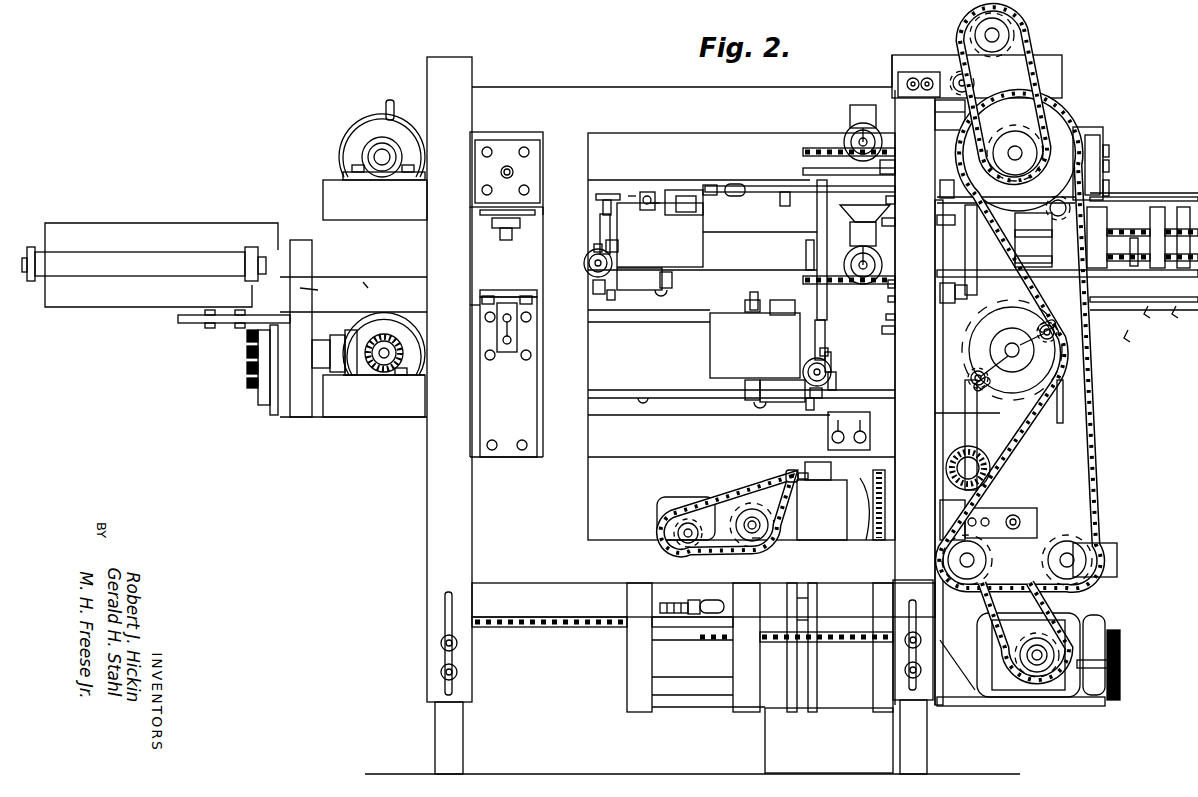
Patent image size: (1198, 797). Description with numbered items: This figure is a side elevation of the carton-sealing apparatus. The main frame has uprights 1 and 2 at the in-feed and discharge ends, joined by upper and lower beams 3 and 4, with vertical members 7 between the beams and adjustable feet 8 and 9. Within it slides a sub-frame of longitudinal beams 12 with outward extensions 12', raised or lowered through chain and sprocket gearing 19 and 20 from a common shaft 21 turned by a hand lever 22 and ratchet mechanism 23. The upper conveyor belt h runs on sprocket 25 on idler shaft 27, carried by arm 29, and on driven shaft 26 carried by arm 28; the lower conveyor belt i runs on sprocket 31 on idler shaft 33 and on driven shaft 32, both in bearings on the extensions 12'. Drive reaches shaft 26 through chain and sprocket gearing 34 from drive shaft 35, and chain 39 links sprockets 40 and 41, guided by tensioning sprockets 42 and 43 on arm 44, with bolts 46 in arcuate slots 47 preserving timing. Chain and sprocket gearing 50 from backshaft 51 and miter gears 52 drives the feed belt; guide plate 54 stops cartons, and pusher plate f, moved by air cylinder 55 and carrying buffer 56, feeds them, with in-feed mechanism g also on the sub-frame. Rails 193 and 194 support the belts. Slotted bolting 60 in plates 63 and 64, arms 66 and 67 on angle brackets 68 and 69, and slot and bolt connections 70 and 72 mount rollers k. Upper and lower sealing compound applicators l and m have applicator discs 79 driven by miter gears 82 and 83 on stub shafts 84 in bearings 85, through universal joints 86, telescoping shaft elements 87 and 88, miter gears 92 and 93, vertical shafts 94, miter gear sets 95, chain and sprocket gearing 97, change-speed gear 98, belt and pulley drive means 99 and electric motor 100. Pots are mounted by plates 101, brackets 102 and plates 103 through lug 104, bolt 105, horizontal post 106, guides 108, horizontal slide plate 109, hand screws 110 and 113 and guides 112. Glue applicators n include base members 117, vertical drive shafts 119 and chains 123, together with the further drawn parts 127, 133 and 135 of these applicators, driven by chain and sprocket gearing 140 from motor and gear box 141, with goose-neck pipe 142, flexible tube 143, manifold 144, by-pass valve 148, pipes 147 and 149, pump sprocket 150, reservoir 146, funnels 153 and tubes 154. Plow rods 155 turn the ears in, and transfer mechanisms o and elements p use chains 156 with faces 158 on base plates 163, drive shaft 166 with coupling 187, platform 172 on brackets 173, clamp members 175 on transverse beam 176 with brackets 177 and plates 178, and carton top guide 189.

The upright 1 is at (426, 498).
The upright 2 is at (930, 430).
The upper beam 3 is at (650, 93).
The lower beam 4 is at (606, 585).
The vertical member 7 is at (618, 503).
The adjustable foot 8 is at (436, 731).
The adjustable foot 9 is at (922, 735).
The longitudinal beam 12 is at (627, 469).
The outward extension 12' is at (675, 430).
The chain and sprocket gearing 19 is at (530, 628).
The chain and sprocket gearing 20 is at (824, 646).
The common shaft 21 is at (692, 598).
The hand lever 22 is at (715, 598).
The ratchet mechanism 23 is at (676, 600).
The link belt sprocket 25 is at (355, 137).
The driven shaft 26 is at (1020, 152).
The idler shaft 27 is at (380, 157).
The arm 28 is at (1090, 130).
The arm 29 is at (323, 196).
The link belt sprocket 31 is at (418, 352).
The driven shaft 32 is at (1019, 354).
The idler shaft 33 is at (376, 372).
The chain and sprocket gearing 34 is at (1040, 84).
The drive shaft 35 is at (1002, 35).
The chain 39 is at (1090, 440).
The sprocket 40 is at (970, 160).
The sprocket 41 is at (968, 337).
The tensioning sprocket 42 is at (945, 563).
The tensioning sprocket 43 is at (1075, 555).
The arm 44 is at (1118, 563).
The bolt 46 is at (1058, 332).
The arcuate slot 47 is at (1038, 328).
The chain and sprocket gearing 50 is at (246, 373).
The backshaft 51 is at (353, 328).
The miter gears 52 is at (377, 339).
The guide plate 54 is at (762, 232).
The air cylinder 55 is at (170, 256).
The buffer 56 is at (216, 222).
The slotted bolting 60 is at (524, 147).
The plate 63 is at (535, 173).
The plate 64 is at (536, 393).
The upper arm 66 is at (503, 228).
The lower arm 67 is at (491, 291).
The upper angle bracket 68 is at (512, 228).
The lower angle bracket 69 is at (525, 291).
The slot and bolt connection 70 is at (481, 214).
The slot and bolt connection 72 is at (518, 318).
The applicator disc 79 is at (656, 203).
The driven miter gear 82 is at (658, 196).
The miter gear 83 is at (680, 198).
The stub shaft 84 is at (712, 198).
The bearing 85 is at (692, 200).
The universal joint 86 is at (728, 195).
The telescoping shaft element 87 is at (752, 190).
The telescoping shaft element 88 is at (788, 194).
The miter gear 92 is at (940, 188).
The miter gear 93 is at (975, 216).
The vertical shaft 94 is at (972, 252).
The miter gear set 95 is at (950, 475).
The chain and sprocket gearing 97 is at (982, 612).
The change-speed gear 98 is at (1052, 640).
The belt and pulley drive means 99 is at (1100, 620).
The electric motor 100 is at (990, 636).
The plate 101 is at (592, 247).
The bracket 102 is at (834, 376).
The plate 103 is at (830, 358).
The lug 104 is at (660, 290).
The bolt 105 is at (672, 283).
The horizontal post 106 is at (620, 285).
The guide 108 is at (618, 250).
The horizontal slide plate 109 is at (592, 287).
The hand screw 110 is at (598, 216).
The guide 112 is at (614, 215).
The hand screw 113 is at (584, 266).
The base member 117 is at (812, 172).
The vertical drive shaft 119 is at (816, 223).
The chain 123 is at (812, 153).
The post 127 is at (815, 252).
The bracket 133 is at (858, 126).
The wheel 135 is at (870, 133).
The chain and sprocket gearing 140 is at (745, 505).
The electric motor and gear box 141 is at (700, 500).
The goose-neck pipe 142 is at (890, 168).
The flexible tube 143 is at (885, 500).
The manifold 144 is at (786, 476).
The glue reservoir 146 is at (829, 740).
The pipe 147 is at (800, 620).
The by-pass valve 148 is at (770, 500).
The pipe 149 is at (820, 598).
The sprocket 150 is at (750, 538).
The funnel 153 is at (890, 222).
The tube 154 is at (885, 390).
The plow rod 155 is at (1180, 197).
The chain 156 is at (1155, 268).
The carton-contacting face 158 is at (1108, 220).
The base plate 163 is at (1135, 278).
The drive shaft 166 is at (1048, 217).
The platform 172 is at (1144, 323).
The bracket 173 is at (1065, 395).
The clamp member 175 is at (1103, 134).
The transverse beam 176 is at (1109, 148).
The bracket 177 is at (1109, 186).
The plate 178 is at (1109, 162).
The two-part coupling 187 is at (1054, 201).
The carton top guide 189 is at (1158, 196).
The fixed rail 193 is at (606, 194).
The fixed rail 194 is at (665, 330).
The pusher plate f is at (315, 292).
The in-feed mechanism g is at (350, 300).
The upper conveyor belt h is at (631, 195).
The lower conveyor belt i is at (622, 322).
The roller k is at (540, 203).
The upper sealing compound applicator l is at (704, 257).
The lower sealing compound applicator m is at (710, 365).
The glue applicator n is at (890, 198).
The transfer mechanism o is at (1152, 318).
The transfer unit element p is at (1120, 255).